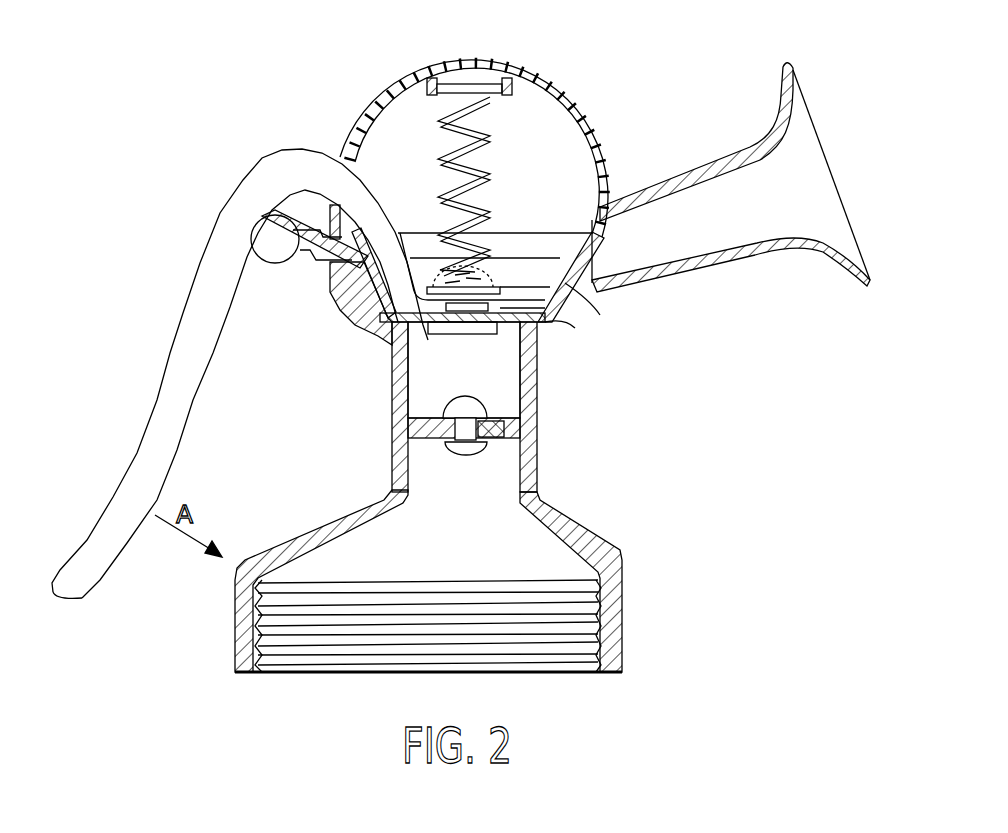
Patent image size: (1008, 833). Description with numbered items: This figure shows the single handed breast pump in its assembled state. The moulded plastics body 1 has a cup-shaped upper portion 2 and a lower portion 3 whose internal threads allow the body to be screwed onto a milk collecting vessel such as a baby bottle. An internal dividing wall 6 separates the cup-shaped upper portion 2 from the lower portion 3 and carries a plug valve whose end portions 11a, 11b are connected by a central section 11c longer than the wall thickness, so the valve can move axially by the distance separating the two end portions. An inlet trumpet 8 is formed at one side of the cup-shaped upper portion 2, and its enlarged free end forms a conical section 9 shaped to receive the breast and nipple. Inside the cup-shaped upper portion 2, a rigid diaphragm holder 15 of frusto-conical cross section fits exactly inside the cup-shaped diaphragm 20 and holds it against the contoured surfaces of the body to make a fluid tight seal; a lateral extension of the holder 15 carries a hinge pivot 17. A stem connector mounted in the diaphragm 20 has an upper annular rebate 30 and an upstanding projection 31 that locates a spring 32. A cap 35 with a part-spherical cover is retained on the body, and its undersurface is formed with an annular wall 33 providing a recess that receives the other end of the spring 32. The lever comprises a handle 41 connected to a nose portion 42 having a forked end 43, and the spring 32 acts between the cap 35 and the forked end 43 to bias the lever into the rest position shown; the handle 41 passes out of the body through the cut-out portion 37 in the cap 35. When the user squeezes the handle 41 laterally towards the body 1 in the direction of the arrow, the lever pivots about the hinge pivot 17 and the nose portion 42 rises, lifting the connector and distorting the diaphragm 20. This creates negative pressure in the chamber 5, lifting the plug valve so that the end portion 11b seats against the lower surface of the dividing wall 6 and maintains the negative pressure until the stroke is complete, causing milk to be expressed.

The body 1 is at (533, 480).
The cup-shaped upper portion 2 is at (345, 307).
The lower portion 3 is at (622, 622).
The chamber 5 is at (412, 375).
The internal dividing wall 6 is at (508, 430).
The inlet trumpet 8 is at (742, 255).
The conical section 9 is at (855, 278).
The end portion of plug valve 11a is at (493, 381).
The end portion of plug valve 11b is at (463, 455).
The central section of plug valve 11c is at (503, 437).
The diaphragm holder 15 is at (600, 315).
The hinge pivot 17 is at (250, 230).
The diaphragm 20 is at (575, 328).
The upper annular rebate 30 is at (450, 300).
The upstanding projection 31 is at (498, 276).
The spring 32 is at (497, 212).
The annular wall 33 is at (500, 97).
The cap 35 is at (516, 78).
The cut-out portion 37 is at (343, 152).
The handle 41 is at (193, 323).
The nose portion 42 is at (366, 206).
The forked end 43 is at (540, 340).